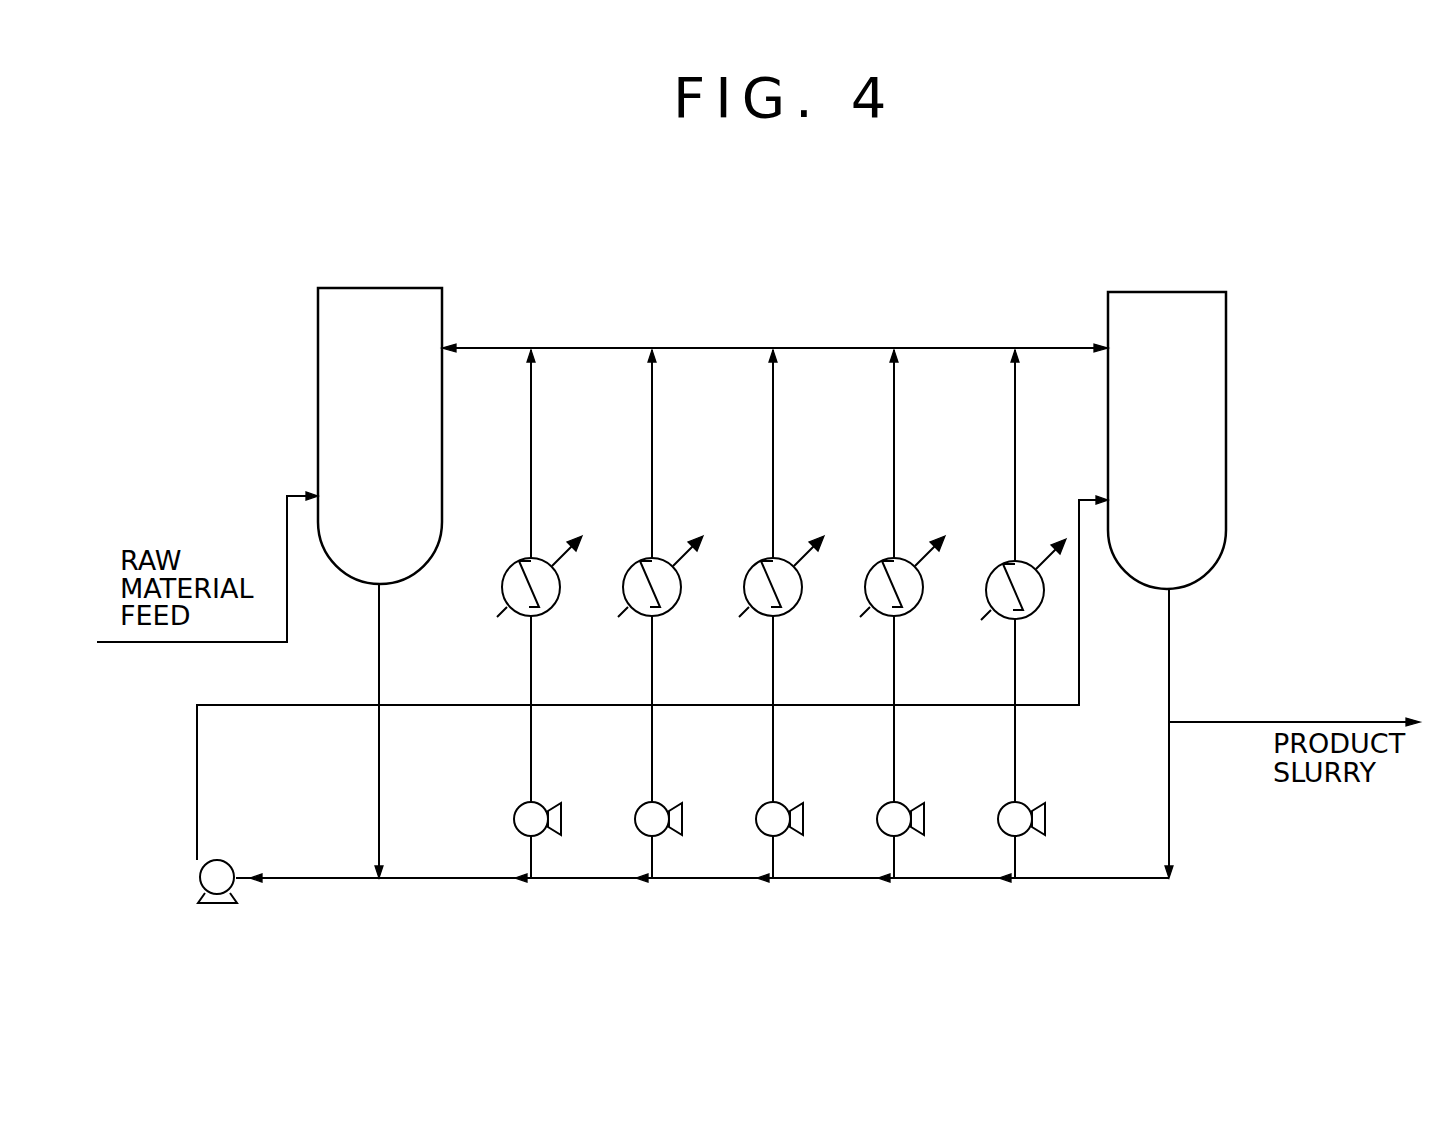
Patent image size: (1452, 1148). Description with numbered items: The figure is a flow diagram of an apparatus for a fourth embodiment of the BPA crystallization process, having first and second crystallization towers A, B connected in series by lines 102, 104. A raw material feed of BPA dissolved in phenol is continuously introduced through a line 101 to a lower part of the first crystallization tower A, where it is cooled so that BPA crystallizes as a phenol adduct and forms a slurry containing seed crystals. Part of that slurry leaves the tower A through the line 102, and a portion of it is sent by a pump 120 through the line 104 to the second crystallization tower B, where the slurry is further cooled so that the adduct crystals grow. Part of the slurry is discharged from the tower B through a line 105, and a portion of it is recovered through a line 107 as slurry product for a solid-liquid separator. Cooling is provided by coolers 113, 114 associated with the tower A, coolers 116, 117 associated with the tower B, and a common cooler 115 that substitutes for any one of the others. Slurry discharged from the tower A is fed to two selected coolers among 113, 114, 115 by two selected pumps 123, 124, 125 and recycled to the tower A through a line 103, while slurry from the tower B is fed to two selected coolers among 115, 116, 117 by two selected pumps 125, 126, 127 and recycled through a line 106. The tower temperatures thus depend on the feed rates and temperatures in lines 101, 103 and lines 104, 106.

The first crystallization tower A is at (376, 288).
The second crystallization tower B is at (1112, 292).
The line 101 is at (287, 540).
The line 102 is at (380, 650).
The line 103 is at (488, 348).
The line 104 is at (1080, 660).
The line 105 is at (1170, 645).
The line 106 is at (1046, 348).
The line 107 is at (1193, 722).
The cooler 113 is at (557, 604).
The cooler 114 is at (678, 604).
The common cooler 115 is at (799, 604).
The cooler 116 is at (920, 604).
The cooler 117 is at (1028, 614).
The pump 120 is at (232, 860).
The pump 123 is at (517, 805).
The pump 124 is at (638, 805).
The pump 125 is at (759, 805).
The pump 126 is at (880, 805).
The pump 127 is at (1001, 805).